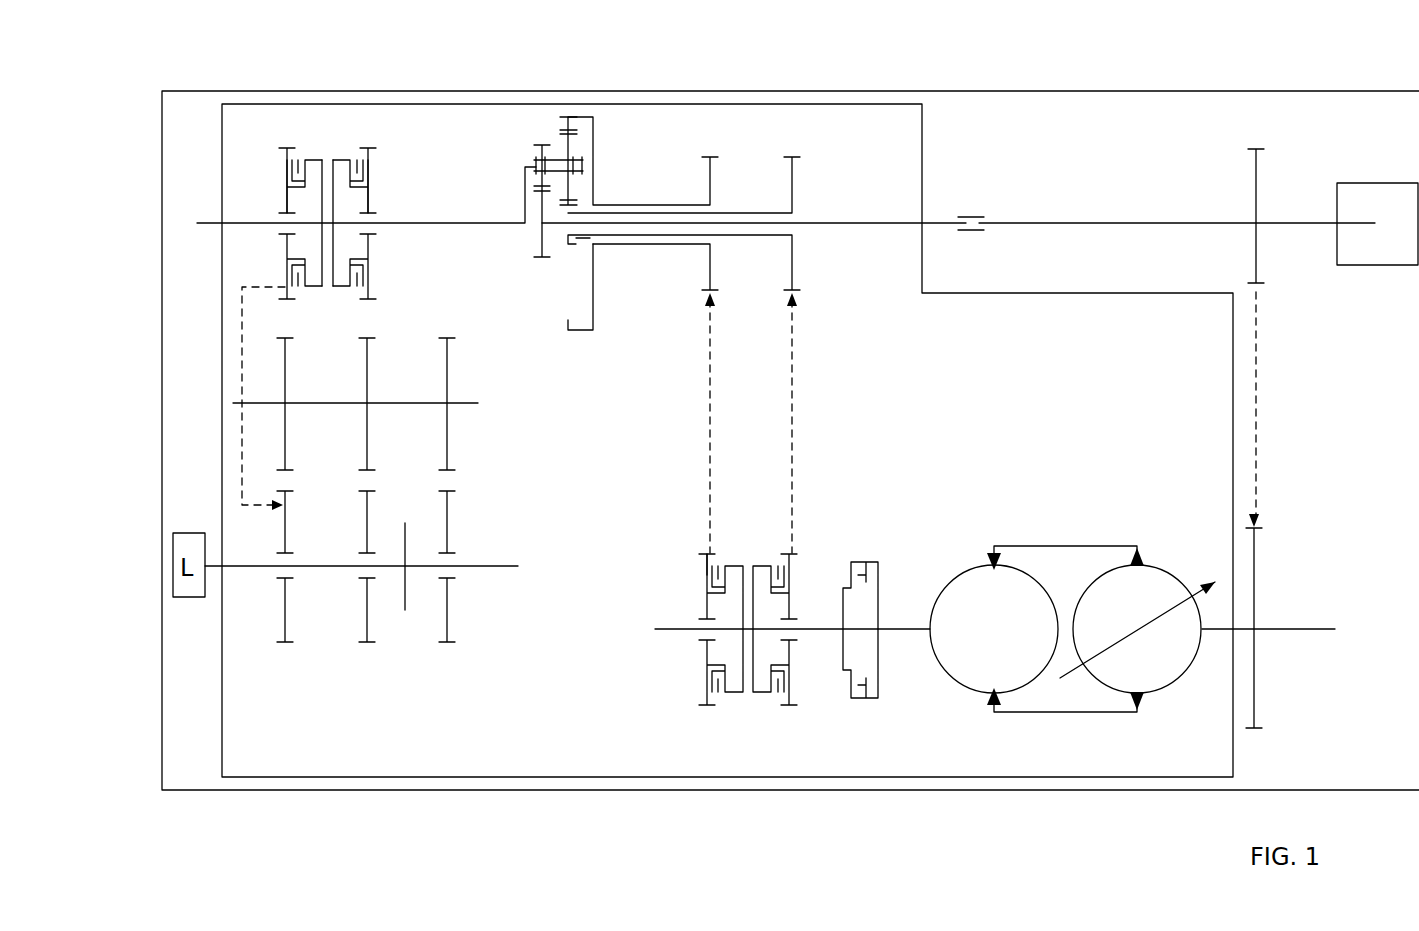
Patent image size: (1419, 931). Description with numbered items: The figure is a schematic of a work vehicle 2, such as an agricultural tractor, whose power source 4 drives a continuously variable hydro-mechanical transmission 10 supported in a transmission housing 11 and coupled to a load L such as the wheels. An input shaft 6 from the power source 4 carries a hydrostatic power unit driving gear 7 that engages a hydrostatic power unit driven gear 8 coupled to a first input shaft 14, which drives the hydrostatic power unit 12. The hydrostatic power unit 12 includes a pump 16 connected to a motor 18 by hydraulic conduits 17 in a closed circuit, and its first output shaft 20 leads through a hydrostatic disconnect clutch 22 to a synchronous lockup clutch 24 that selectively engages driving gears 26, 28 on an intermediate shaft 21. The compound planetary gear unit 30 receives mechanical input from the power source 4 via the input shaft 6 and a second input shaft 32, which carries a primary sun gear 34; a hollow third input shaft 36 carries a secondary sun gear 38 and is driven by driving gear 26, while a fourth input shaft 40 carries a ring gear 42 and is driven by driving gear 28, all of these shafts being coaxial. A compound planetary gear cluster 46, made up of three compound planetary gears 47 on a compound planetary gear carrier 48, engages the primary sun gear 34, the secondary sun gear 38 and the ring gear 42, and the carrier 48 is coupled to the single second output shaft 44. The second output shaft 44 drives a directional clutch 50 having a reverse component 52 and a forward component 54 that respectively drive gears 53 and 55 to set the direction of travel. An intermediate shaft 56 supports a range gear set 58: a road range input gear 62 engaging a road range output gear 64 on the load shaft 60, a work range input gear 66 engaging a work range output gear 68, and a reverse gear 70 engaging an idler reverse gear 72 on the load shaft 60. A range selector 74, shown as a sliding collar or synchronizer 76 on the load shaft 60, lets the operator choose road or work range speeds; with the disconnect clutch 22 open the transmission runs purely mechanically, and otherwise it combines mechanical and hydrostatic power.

The work vehicle 2 is at (470, 792).
The power source 4 is at (1380, 267).
The input shaft 6 is at (1082, 222).
The hydrostatic power unit driving gear 7 is at (1258, 190).
The hydrostatic power unit driven gear 8 is at (1256, 582).
The continuously variable hydro-mechanical transmission 10 is at (1180, 267).
The transmission housing 11 is at (1080, 292).
The hydrostatic power unit 12 is at (1005, 498).
The first input shaft 14 is at (1220, 630).
The pump 16 is at (1165, 565).
The hydraulic conduits 17 is at (1065, 545).
The motor 18 is at (933, 665).
The first output shaft 20 is at (900, 628).
The intermediate shaft 21 is at (680, 628).
The hydrostatic disconnect clutch 22 is at (850, 718).
The synchronous lockup clutch 24 is at (730, 720).
The driving gear 26 is at (790, 570).
The driving gear 28 is at (705, 570).
The compound planetary gear unit 30 is at (520, 283).
The second input shaft 32 is at (858, 222).
The primary sun gear 34 is at (535, 240).
The third input shaft 36 is at (740, 212).
The secondary sun gear 38 is at (598, 245).
The fourth input shaft 40 is at (628, 204).
The ring gear 42 is at (600, 320).
The second output shaft 44 is at (440, 222).
The compound planetary gear cluster 46 is at (510, 158).
The compound planetary gear 47 is at (566, 130).
The compound planetary gear carrier 48 is at (530, 193).
The directional clutch 50 is at (330, 118).
The reverse component 52 is at (302, 158).
The gear 53 is at (285, 174).
The forward component 54 is at (357, 158).
The gear 55 is at (368, 174).
The intermediate shaft 56 is at (470, 406).
The range gear set 58 is at (514, 470).
The load shaft 60 is at (480, 567).
The road range input gear 62 is at (369, 360).
The road range output gear 64 is at (366, 618).
The work range input gear 66 is at (449, 390).
The work range output gear 68 is at (450, 625).
The reverse gear 70 is at (287, 360).
The idler reverse gear 72 is at (287, 538).
The range selector 74 is at (423, 648).
The synchronizer 76 is at (406, 531).